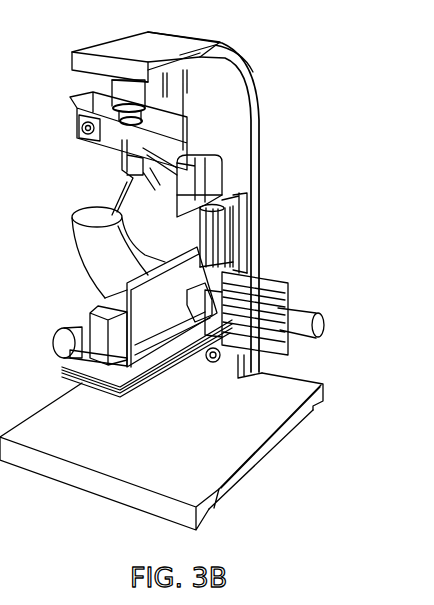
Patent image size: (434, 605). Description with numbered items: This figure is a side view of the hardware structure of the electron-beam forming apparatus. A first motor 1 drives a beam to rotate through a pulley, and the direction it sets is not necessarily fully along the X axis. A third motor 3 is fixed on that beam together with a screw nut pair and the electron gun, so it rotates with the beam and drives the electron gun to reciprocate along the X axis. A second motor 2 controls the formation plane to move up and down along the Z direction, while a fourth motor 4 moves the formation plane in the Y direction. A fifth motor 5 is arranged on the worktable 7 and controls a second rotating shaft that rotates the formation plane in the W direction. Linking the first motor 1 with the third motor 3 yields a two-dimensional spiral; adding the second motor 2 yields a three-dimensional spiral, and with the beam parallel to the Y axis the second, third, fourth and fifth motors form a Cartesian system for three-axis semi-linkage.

The first motor 1 is at (130, 90).
The second motor 2 is at (215, 178).
The third motor 3 is at (193, 202).
The fourth motor 4 is at (303, 318).
The fifth motor 5 is at (82, 330).
The worktable 7 is at (155, 355).